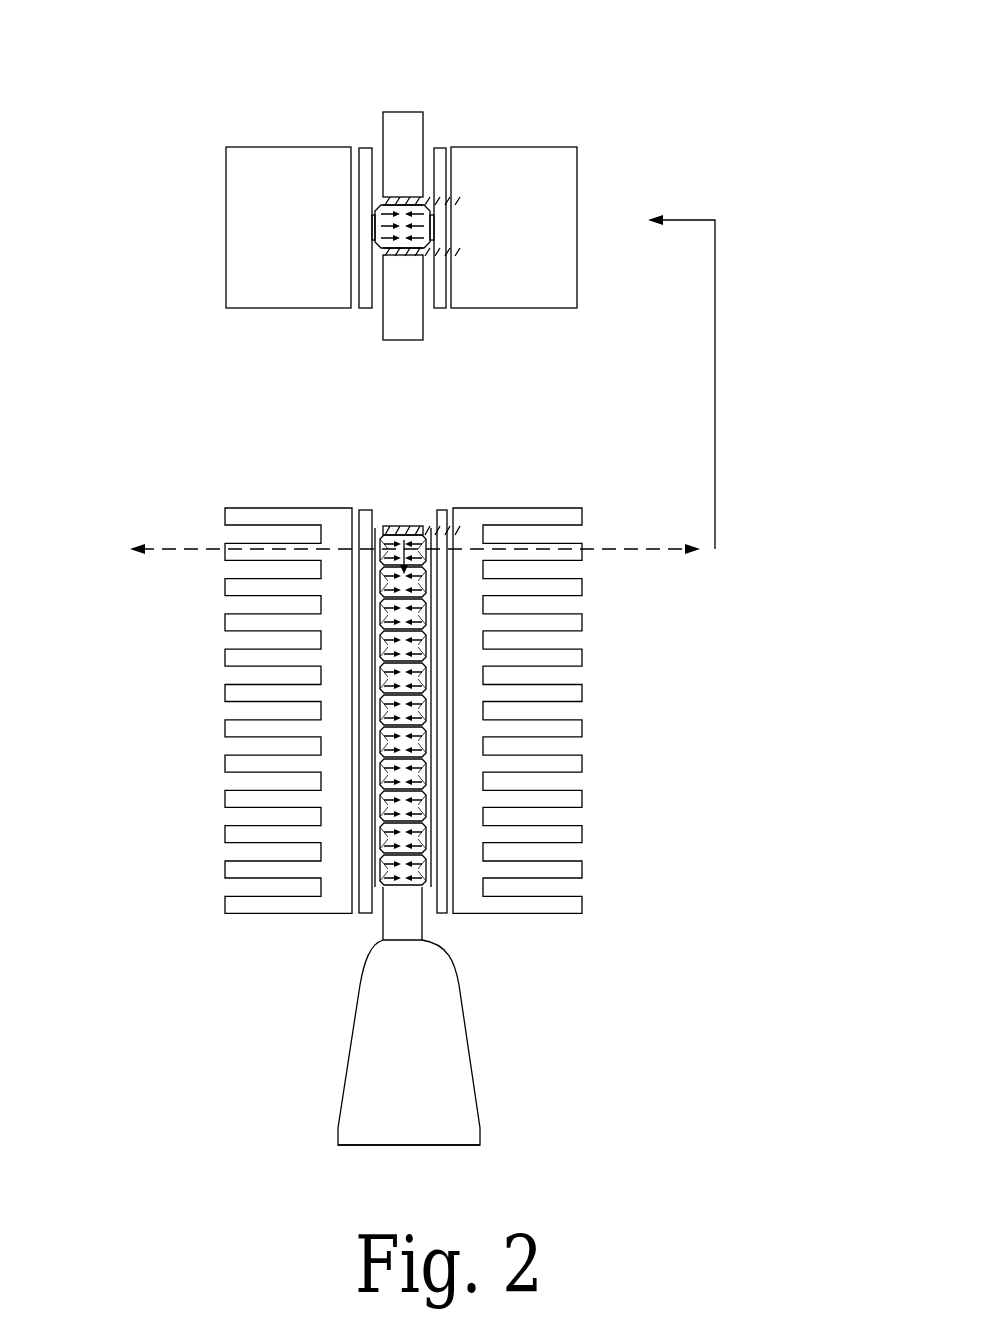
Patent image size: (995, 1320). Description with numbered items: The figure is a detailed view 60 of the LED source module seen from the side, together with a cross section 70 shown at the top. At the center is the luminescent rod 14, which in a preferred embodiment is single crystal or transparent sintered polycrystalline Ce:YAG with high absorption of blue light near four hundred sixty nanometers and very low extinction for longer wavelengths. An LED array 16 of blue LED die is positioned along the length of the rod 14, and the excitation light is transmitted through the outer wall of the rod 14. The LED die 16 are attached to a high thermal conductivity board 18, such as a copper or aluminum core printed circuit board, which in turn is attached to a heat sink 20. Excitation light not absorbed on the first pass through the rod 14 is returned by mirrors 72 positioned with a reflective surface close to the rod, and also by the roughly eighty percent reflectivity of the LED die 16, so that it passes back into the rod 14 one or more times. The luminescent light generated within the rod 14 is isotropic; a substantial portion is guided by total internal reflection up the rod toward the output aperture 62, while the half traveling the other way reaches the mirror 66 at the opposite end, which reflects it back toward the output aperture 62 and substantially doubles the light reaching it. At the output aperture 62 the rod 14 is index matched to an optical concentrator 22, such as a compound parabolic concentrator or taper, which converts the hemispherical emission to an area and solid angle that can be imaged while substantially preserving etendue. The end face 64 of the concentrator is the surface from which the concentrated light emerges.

The luminescent rod 14 is at (400, 227).
The LED array 16 is at (423, 533).
The high thermal conductivity board 18 is at (448, 505).
The heat sink 20 is at (533, 507).
The optical concentrator 22 is at (399, 1072).
The detailed view 60 is at (399, 709).
The output aperture 62 is at (382, 940).
The radiating end face 64 is at (390, 1145).
The mirror 66 is at (407, 527).
The cross section 70 is at (311, 214).
The mirrors 72 is at (411, 365).